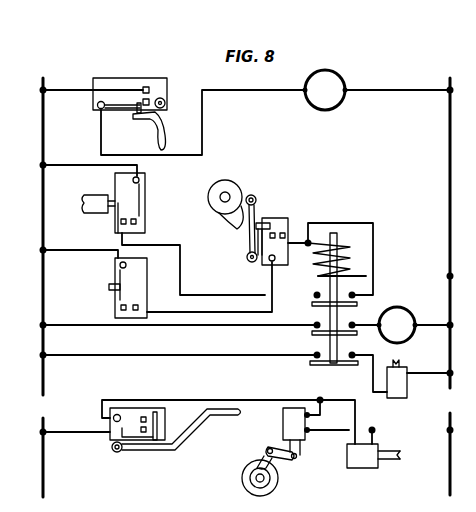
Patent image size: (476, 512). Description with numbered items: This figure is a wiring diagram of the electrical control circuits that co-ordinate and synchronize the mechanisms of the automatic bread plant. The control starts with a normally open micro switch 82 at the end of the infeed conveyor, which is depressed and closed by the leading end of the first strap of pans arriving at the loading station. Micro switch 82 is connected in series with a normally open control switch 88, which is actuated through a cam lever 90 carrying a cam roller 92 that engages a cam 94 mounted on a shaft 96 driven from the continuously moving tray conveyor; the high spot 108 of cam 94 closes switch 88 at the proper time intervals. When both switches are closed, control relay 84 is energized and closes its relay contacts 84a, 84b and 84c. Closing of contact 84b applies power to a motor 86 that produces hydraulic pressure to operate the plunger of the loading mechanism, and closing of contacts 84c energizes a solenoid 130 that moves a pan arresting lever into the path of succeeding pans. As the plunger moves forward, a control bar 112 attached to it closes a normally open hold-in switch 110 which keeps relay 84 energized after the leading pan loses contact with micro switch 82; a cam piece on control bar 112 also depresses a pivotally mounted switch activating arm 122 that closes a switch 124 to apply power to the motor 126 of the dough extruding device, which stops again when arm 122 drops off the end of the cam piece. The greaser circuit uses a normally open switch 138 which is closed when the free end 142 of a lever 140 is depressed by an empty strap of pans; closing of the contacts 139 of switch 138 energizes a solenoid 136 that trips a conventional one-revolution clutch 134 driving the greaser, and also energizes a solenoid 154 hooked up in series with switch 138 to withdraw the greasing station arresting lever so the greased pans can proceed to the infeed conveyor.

The switch 124 is at (113, 85).
The switch activating arm 122 is at (161, 123).
The motor 126 is at (330, 70).
The cam 94 is at (229, 186).
The shaft 96 is at (220, 197).
The cam roller 92 is at (257, 197).
The control switch 88 is at (262, 221).
The hold-in switch 110 is at (128, 180).
The control bar 112 is at (97, 210).
The high spot 108 is at (246, 221).
The cam lever 90 is at (249, 232).
The control relay 84 is at (355, 256).
The micro switch 82 is at (133, 276).
The relay contact 84a is at (317, 292).
The relay contact 84b is at (317, 322).
The relay contact 84c is at (317, 352).
The motor 86 is at (398, 308).
The solenoid 130 is at (393, 393).
The contacts 139 is at (145, 415).
The free end 142 is at (232, 400).
The solenoid 136 is at (284, 418).
The switch 138 is at (118, 428).
The lever 140 is at (167, 448).
The one-revolution clutch 134 is at (277, 471).
The solenoid 154 is at (362, 456).